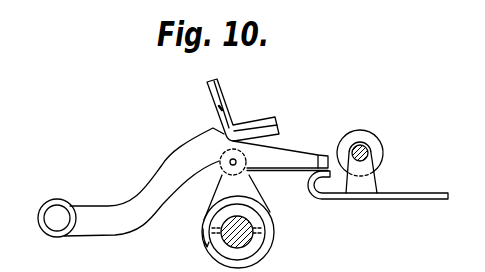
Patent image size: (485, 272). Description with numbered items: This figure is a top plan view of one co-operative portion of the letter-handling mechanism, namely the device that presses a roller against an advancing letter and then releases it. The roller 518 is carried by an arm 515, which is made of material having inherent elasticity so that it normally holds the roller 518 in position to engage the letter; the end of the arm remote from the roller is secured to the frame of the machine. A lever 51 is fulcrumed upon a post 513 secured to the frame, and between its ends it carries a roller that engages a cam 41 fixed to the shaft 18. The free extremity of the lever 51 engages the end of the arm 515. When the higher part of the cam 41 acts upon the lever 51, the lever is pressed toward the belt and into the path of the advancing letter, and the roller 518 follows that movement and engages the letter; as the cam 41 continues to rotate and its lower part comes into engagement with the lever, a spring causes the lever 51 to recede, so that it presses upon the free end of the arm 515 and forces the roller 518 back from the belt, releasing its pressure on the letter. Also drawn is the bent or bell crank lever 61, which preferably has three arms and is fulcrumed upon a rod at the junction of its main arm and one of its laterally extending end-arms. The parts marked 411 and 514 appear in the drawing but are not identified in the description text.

The shaft 18 is at (245, 220).
The cam 41 is at (203, 222).
The lever 51 is at (144, 182).
The bent or bell crank lever 61 is at (226, 114).
The hub of lever 411 is at (262, 243).
The post 513 is at (58, 220).
The lever arm extension 514 is at (318, 155).
The arm 515 is at (400, 195).
The roller 518 is at (378, 147).